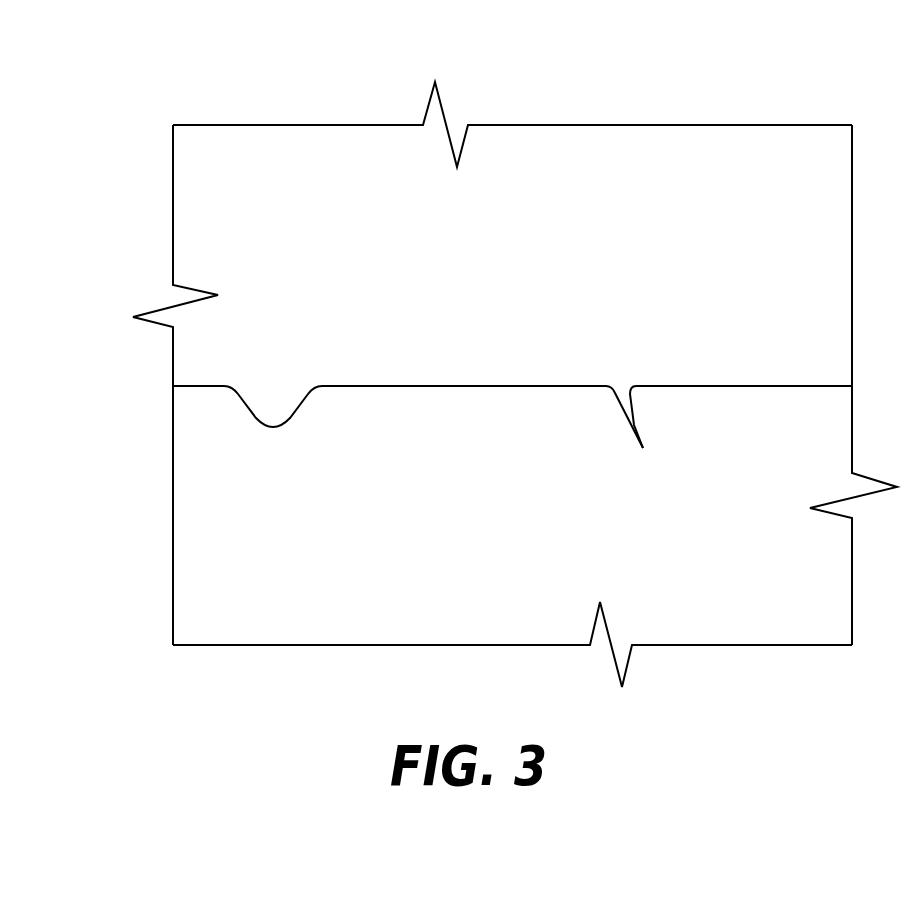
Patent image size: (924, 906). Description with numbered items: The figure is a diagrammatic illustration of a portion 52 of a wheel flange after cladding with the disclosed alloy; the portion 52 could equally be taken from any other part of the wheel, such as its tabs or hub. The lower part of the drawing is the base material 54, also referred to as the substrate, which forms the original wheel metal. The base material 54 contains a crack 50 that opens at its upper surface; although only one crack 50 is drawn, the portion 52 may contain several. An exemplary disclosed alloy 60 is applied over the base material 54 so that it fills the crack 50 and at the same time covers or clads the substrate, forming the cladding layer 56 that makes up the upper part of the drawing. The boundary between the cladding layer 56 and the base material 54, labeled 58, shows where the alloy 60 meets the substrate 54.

The portion 52 is at (703, 88).
The cladding layer 56 is at (558, 261).
The base material 54 is at (449, 557).
The interface 58 is at (445, 384).
The crack 50 is at (639, 430).
The alloy 60 is at (173, 202).